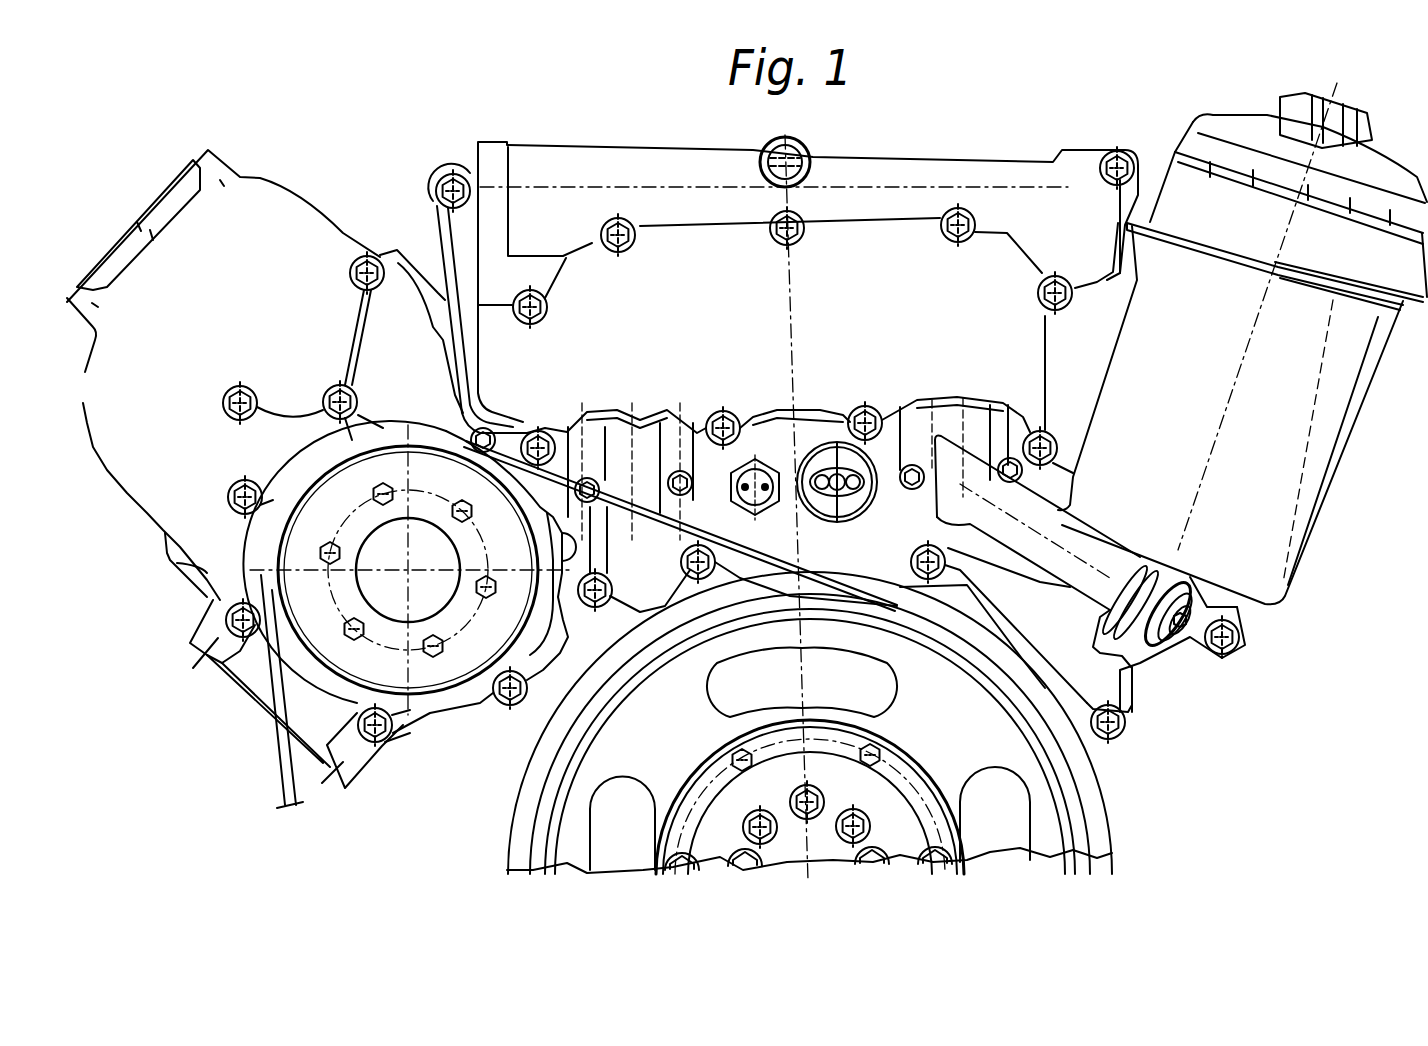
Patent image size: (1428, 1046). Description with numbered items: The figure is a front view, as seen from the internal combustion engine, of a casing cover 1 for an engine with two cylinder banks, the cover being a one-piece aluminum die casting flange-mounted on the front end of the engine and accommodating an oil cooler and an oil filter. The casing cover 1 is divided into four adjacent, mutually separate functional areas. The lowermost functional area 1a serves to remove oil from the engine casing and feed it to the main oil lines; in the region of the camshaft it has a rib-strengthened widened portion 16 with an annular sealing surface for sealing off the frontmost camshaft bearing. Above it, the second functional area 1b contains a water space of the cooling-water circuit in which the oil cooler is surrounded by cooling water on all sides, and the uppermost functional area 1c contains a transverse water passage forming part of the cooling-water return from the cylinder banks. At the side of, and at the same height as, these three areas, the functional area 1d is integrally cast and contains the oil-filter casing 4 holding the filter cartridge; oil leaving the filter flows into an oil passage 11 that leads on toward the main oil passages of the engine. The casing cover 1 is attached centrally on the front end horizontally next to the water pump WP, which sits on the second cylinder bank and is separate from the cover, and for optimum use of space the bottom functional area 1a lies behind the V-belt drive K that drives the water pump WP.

The casing cover 1 is at (890, 243).
The lowermost functional area 1a is at (652, 561).
The second functional area 1b is at (906, 327).
The functional area 1c is at (572, 224).
The functional area 1d is at (1180, 420).
The oil-filter casing 4 is at (1320, 453).
The oil passage 11 is at (1084, 543).
The rib-strengthened widened portion 16 is at (842, 557).
The V-belt drive K is at (755, 548).
The water pump WP is at (471, 726).